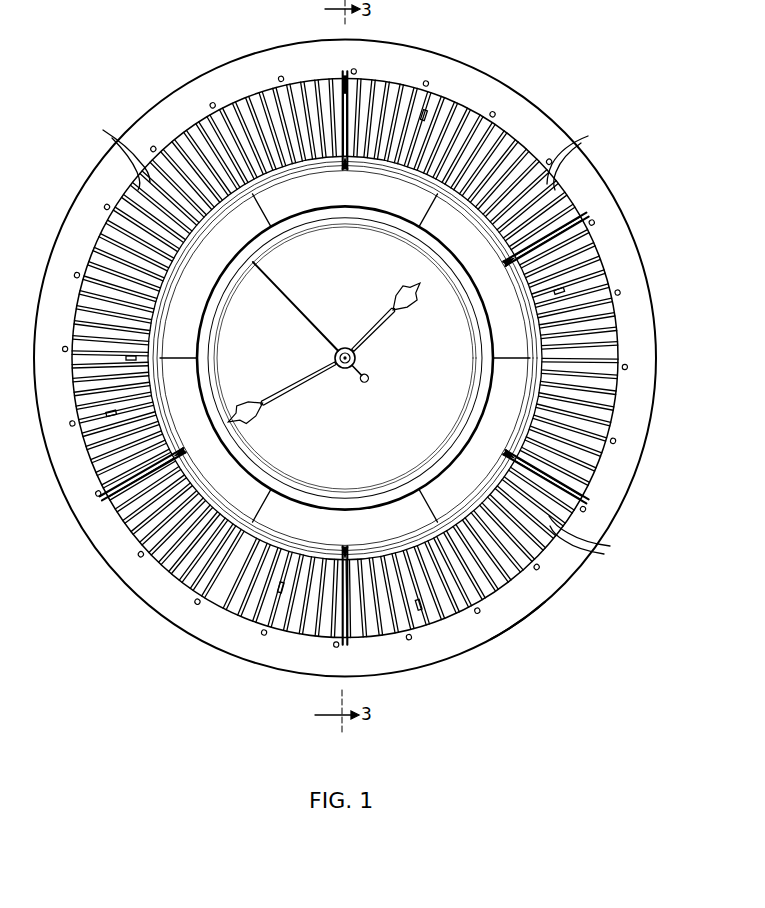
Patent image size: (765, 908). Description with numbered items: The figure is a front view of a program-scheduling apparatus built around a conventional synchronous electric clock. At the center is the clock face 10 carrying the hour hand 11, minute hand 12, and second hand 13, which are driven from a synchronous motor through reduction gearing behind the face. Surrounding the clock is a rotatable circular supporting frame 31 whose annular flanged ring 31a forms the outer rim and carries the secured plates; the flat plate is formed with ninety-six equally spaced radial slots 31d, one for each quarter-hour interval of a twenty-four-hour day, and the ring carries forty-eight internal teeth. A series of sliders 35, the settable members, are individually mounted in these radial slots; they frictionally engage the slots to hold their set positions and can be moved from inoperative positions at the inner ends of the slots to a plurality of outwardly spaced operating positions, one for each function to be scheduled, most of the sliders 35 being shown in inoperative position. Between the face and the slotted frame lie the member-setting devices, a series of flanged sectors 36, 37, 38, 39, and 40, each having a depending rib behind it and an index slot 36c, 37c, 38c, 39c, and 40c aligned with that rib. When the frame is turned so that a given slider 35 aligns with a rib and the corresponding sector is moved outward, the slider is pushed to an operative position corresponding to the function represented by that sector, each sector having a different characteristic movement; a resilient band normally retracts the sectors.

The face 10 is at (343, 275).
The hour hand 11 is at (385, 311).
The minute hand 12 is at (313, 382).
The second hand 13 is at (286, 298).
The rotatable circular supporting frame 31 is at (480, 587).
The annular flanged ring 31a is at (548, 600).
The slots 31d is at (355, 337).
The sliders 35 is at (565, 284).
The flanged sector 36 is at (362, 198).
The flanged sector 37 is at (440, 239).
The flanged sector 38 is at (491, 410).
The flanged sector 39 is at (365, 529).
The flanged sector 40 is at (170, 415).
The index slot 36c is at (345, 172).
The index slot 37c is at (508, 266).
The index slot 38c is at (505, 452).
The index slot 39c is at (346, 540).
The index slot 40c is at (183, 446).